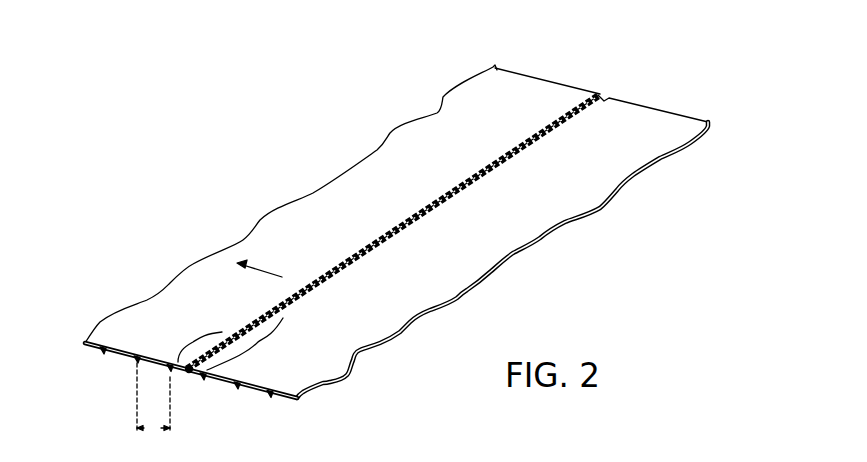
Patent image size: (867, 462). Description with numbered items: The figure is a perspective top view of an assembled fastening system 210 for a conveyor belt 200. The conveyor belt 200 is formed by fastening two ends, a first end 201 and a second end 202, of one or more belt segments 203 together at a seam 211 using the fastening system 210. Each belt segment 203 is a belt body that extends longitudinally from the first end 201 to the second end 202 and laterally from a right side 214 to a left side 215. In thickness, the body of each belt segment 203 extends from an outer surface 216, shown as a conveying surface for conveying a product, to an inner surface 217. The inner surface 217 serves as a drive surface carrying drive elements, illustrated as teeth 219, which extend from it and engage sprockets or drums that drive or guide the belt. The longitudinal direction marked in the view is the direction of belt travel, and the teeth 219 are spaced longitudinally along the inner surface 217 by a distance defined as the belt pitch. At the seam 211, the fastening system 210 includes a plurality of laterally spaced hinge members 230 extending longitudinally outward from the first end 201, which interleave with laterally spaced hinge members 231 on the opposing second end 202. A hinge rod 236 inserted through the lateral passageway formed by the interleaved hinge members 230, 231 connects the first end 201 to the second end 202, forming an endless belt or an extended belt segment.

The conveyor belt 200 is at (360, 124).
The first end 201 is at (568, 108).
The second end 202 is at (605, 117).
The belt segment 203 is at (416, 185).
The fastening system 210 is at (612, 89).
The seam 211 is at (518, 166).
The right side 214 is at (542, 73).
The left side 215 is at (119, 355).
The outer surface 216 is at (307, 213).
The inner surface 217 is at (257, 397).
The teeth 219 is at (209, 383).
The hinge members 230 is at (188, 338).
The hinge members 231 is at (255, 344).
The hinge rod 236 is at (192, 375).